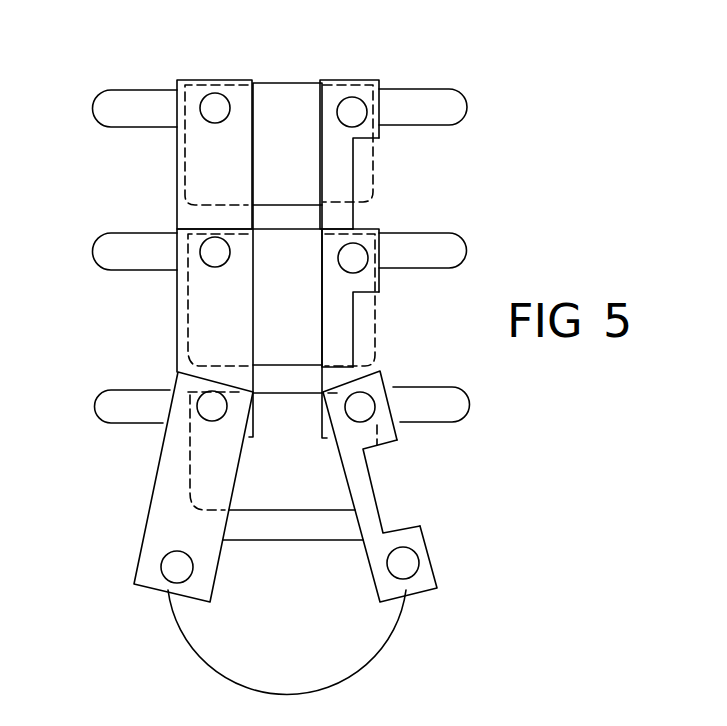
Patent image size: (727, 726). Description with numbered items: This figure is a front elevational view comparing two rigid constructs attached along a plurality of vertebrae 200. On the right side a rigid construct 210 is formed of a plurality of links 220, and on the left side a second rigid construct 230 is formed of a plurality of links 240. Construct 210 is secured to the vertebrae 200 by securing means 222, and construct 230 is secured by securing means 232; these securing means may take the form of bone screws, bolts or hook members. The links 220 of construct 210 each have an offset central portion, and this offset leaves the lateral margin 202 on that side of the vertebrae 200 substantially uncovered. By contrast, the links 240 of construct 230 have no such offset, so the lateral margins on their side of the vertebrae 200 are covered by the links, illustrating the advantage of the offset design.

The vertebrae 200 is at (293, 97).
The lateral margin 202 is at (366, 178).
The rigid construct 210 is at (398, 65).
The links 220 is at (417, 301).
The securing means 222 is at (350, 107).
The rigid construct 230 is at (165, 66).
The securing means 232 is at (215, 103).
The links 240 is at (151, 301).